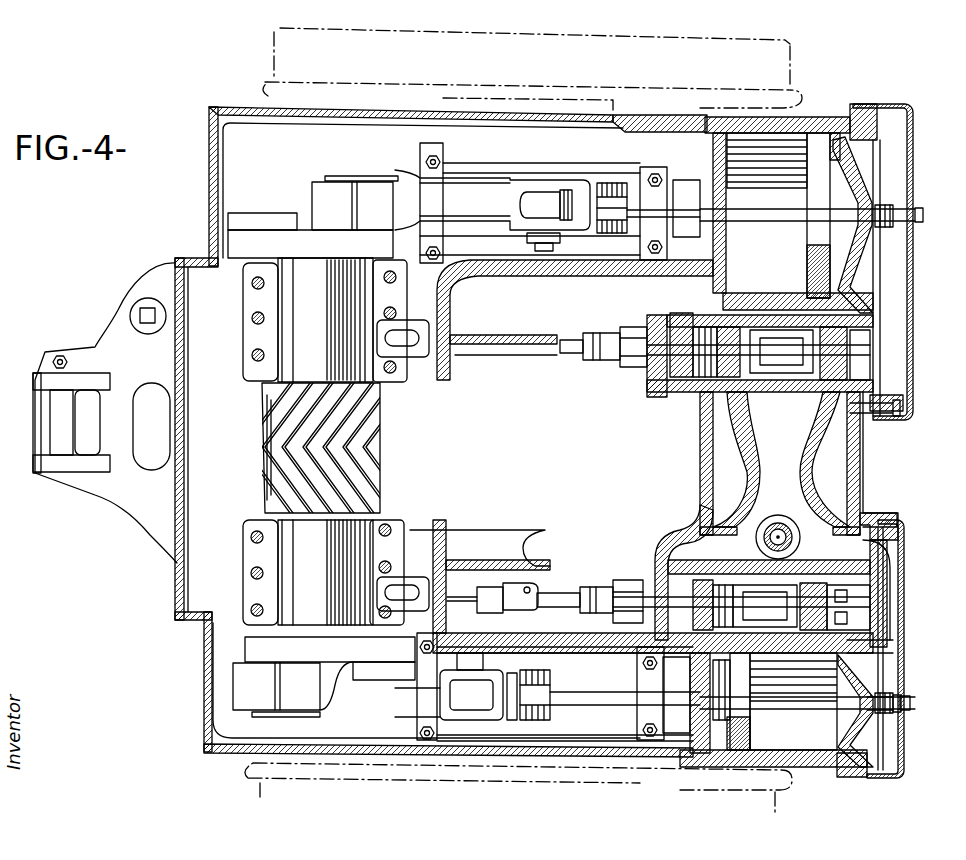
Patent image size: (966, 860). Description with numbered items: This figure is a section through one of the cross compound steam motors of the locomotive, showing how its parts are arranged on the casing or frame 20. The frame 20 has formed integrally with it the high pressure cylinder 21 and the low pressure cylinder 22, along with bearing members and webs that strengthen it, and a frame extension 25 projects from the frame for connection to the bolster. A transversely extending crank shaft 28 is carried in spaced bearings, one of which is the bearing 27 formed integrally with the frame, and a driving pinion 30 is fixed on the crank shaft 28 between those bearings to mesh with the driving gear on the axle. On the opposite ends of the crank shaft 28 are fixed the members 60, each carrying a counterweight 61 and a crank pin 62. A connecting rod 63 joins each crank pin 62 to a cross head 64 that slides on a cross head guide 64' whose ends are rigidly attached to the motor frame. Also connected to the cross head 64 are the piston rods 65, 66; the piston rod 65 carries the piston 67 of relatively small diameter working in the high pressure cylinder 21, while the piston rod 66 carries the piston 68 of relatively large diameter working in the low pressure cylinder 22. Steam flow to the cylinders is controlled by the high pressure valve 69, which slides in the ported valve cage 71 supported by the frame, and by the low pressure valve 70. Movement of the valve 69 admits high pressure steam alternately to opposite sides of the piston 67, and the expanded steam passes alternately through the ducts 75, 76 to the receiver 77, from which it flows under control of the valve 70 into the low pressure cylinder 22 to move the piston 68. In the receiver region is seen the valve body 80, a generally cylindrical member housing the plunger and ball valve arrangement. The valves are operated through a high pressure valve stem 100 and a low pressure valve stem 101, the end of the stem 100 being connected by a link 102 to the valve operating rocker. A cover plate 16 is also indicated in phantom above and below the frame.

The cover plate 16 is at (278, 55).
The casing or frame 20 is at (667, 122).
The high pressure cylinder 21 is at (810, 767).
The low pressure cylinder 22 is at (808, 118).
The frame extension 25 is at (100, 495).
The bearing 27 is at (270, 303).
The crank shaft 28 is at (307, 330).
The driving pinion 30 is at (273, 463).
The members 60 is at (377, 245).
The counterweight 61 is at (273, 222).
The crank pin 62 is at (325, 178).
The connecting rod 63 is at (443, 203).
The cross head 64 is at (547, 472).
The cross head guide 64' is at (573, 472).
The piston rod 65 is at (618, 697).
The piston rod 66 is at (762, 218).
The piston 67 is at (740, 717).
The piston 68 is at (820, 175).
The high pressure valve 69 is at (810, 600).
The low pressure valve 70 is at (830, 368).
The valve cage 71 is at (750, 570).
The duct 75 is at (860, 552).
The duct 76 is at (675, 532).
The receiver 77 is at (760, 437).
The valve body 80 is at (782, 510).
The high pressure valve stem 100 is at (560, 600).
The low pressure valve stem 101 is at (572, 340).
The link 102 is at (470, 590).